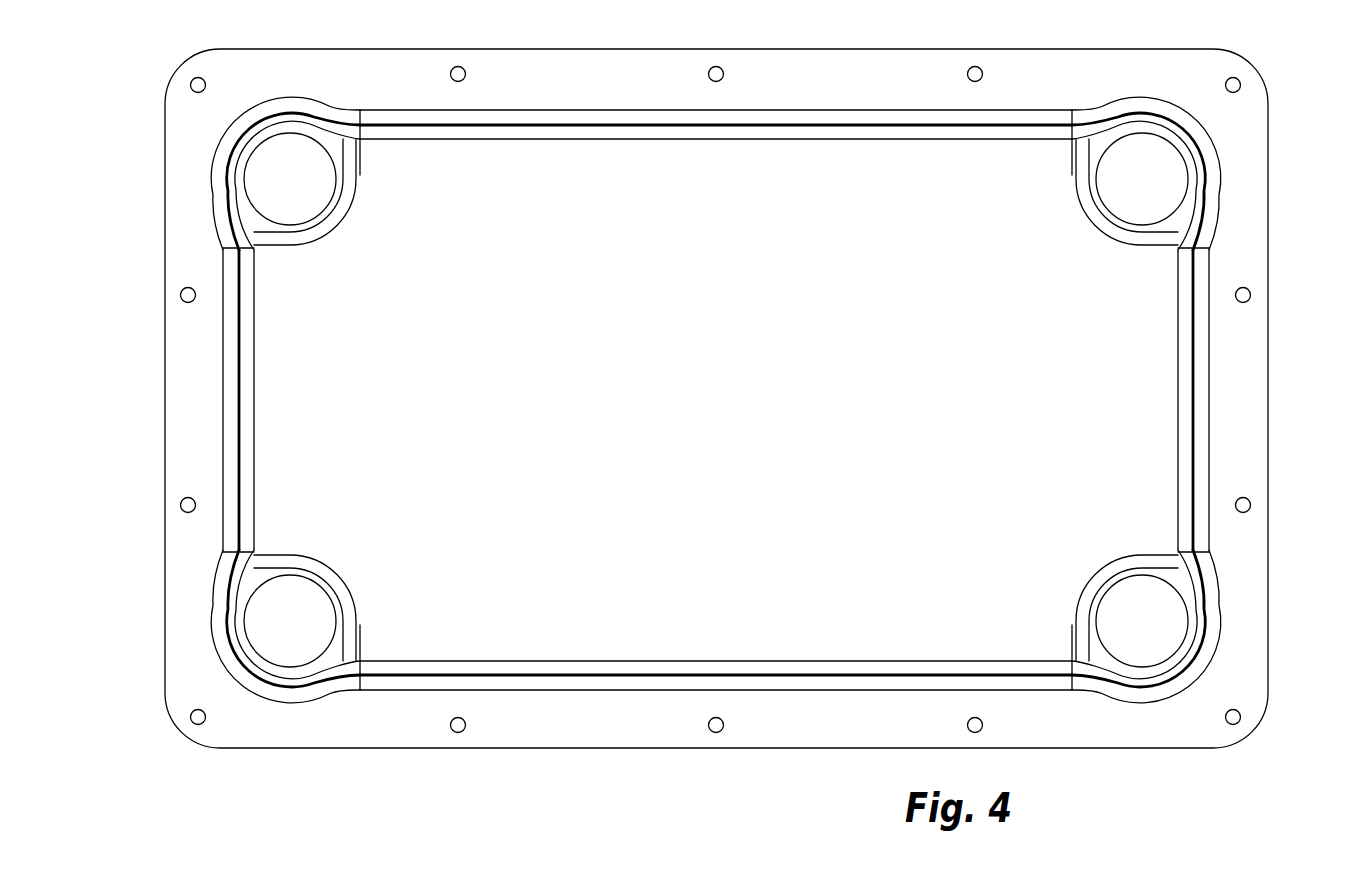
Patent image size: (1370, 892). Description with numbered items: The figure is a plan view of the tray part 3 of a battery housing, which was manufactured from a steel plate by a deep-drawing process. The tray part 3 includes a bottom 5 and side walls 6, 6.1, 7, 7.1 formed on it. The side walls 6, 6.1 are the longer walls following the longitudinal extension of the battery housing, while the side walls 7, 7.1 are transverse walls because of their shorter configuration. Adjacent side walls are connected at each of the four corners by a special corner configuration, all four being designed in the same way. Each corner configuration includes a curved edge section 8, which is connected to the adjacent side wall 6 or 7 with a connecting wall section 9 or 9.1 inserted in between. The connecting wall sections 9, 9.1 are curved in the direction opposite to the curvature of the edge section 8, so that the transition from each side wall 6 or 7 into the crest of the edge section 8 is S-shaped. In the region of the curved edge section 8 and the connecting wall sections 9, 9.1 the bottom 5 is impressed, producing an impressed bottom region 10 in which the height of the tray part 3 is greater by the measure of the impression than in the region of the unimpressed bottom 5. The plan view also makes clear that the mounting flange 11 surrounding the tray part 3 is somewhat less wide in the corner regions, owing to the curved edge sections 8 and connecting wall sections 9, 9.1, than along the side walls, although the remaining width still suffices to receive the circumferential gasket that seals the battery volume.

The tray part 3 is at (1285, 222).
The bottom 5 is at (655, 415).
The side wall 6 is at (688, 127).
The side wall 6.1 is at (832, 671).
The side wall 7 is at (240, 397).
The side wall 7.1 is at (1192, 340).
The curved edge section 8 is at (250, 126).
The connecting wall section 9 is at (326, 129).
The connecting wall section 9.1 is at (243, 209).
The impressed bottom region 10 is at (279, 188).
The mounting flange 11 is at (579, 90).